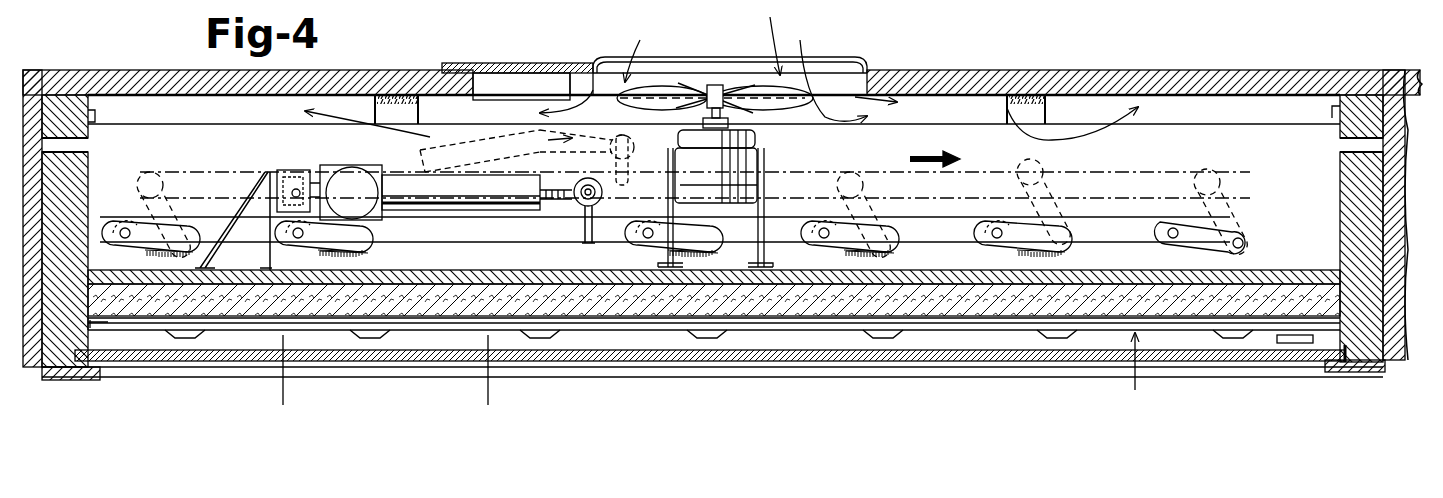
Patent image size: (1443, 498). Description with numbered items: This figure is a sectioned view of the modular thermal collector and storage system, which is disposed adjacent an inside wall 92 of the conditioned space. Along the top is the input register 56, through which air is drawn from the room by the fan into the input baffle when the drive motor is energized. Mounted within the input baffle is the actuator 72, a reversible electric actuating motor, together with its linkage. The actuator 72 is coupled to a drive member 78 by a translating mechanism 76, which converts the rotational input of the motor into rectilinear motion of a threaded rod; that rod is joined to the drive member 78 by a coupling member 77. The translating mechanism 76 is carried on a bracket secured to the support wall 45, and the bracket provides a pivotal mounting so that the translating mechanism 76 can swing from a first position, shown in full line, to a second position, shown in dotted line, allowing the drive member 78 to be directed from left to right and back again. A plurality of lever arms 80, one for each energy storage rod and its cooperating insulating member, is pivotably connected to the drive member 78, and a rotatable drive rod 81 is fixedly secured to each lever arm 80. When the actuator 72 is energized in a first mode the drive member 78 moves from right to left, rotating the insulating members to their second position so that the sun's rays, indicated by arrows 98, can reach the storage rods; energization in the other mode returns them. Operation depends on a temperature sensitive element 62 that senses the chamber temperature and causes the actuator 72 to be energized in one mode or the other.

The inside wall 92 is at (115, 72).
The input register 56 is at (867, 70).
The actuator 72 is at (352, 178).
The translating mechanism 76 is at (418, 176).
The coupling member 77 is at (598, 214).
The drive member 78 is at (990, 163).
The lever arm 80 is at (350, 252).
The rotatable drive rod 81 is at (375, 254).
The support wall 45 is at (1290, 269).
The arrows of solar energy 98 is at (488, 392).
The temperature sensitive element 62 is at (1305, 343).